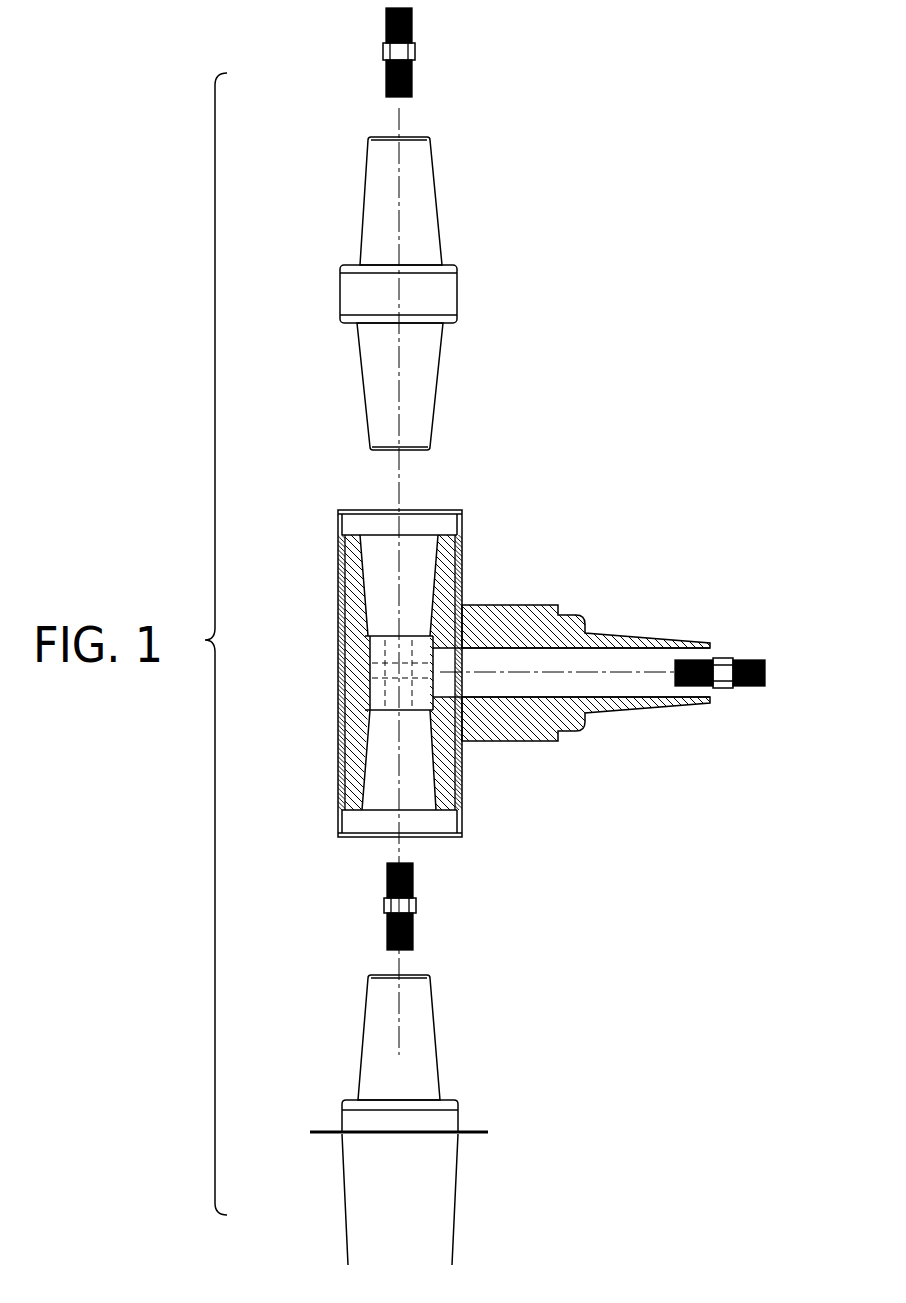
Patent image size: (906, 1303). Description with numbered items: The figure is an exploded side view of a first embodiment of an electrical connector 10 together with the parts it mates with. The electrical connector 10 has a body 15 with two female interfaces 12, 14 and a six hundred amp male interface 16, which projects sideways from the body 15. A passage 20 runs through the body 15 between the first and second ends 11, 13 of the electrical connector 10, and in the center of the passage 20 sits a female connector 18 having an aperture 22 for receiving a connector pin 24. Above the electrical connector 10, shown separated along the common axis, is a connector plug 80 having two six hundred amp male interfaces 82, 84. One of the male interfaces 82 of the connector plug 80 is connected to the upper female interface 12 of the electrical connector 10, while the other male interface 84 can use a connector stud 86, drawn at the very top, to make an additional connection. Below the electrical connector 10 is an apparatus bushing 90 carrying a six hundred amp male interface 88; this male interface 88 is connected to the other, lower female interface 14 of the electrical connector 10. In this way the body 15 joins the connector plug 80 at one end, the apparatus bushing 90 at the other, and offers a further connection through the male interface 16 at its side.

The electrical connector 10 is at (338, 590).
The first end 11 is at (357, 510).
The female interface 12 is at (447, 510).
The second end 13 is at (352, 843).
The female interface 14 is at (448, 840).
The body 15 is at (372, 688).
The male interface 16 is at (690, 638).
The female connector 18 is at (378, 673).
The passage 20 is at (413, 770).
The aperture 22 is at (387, 692).
The connector pin 24 is at (388, 905).
The connector plug 80 is at (363, 215).
The male interface 82 is at (413, 137).
The male interface 84 is at (365, 403).
The connector stud 86 is at (386, 82).
The male interface 88 is at (438, 1050).
The apparatus bushing 90 is at (343, 1163).